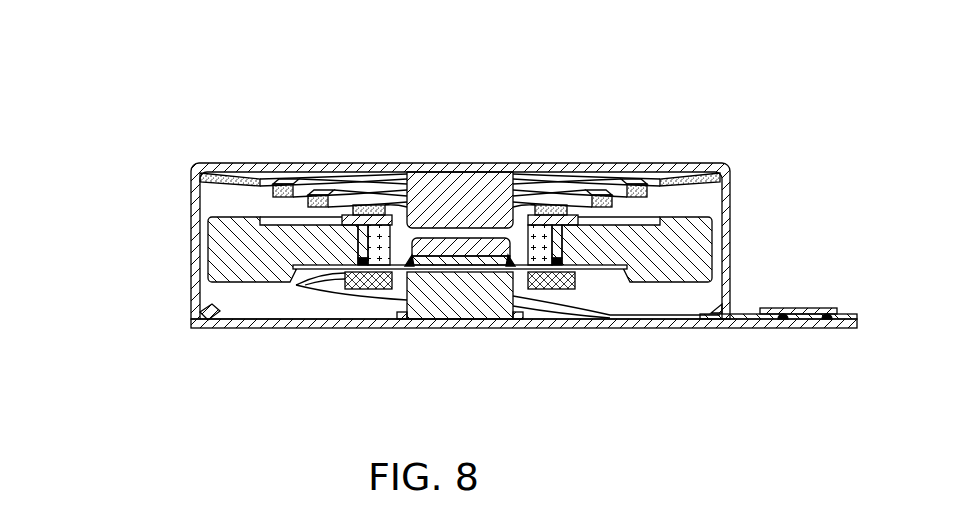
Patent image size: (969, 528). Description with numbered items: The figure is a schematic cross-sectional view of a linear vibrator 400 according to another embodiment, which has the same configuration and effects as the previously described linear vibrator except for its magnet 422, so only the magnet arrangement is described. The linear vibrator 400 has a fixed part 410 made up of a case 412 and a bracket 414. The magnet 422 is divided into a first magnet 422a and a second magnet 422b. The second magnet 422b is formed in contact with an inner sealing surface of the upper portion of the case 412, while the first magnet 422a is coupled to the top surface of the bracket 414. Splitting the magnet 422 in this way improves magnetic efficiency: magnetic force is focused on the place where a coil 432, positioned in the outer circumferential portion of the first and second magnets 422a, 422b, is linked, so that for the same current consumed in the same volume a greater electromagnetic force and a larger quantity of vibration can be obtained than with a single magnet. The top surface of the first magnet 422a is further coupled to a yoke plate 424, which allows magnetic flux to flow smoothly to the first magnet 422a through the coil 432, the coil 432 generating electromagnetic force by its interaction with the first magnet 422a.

The linear vibrator 400 is at (300, 48).
The fixed part 410 is at (82, 275).
The case 412 is at (193, 288).
The bracket 414 is at (196, 329).
The magnet 422 is at (627, 70).
The first magnet 422a is at (537, 240).
The second magnet 422b is at (485, 185).
The yoke plate 424 is at (470, 250).
The coil 432 is at (383, 270).